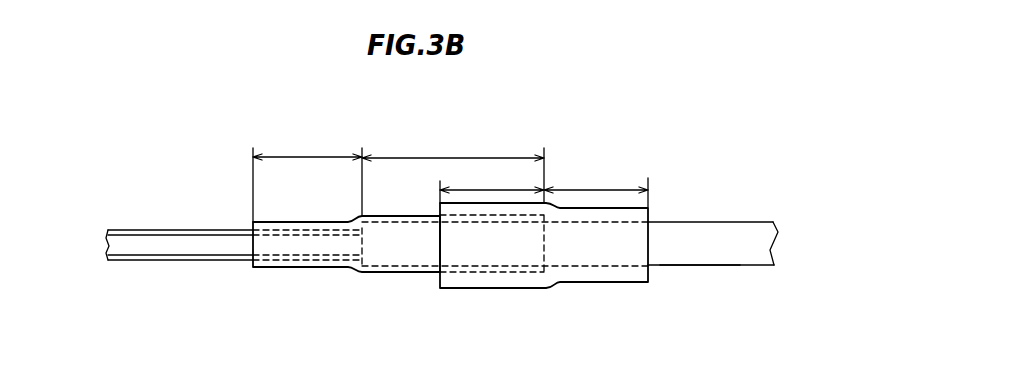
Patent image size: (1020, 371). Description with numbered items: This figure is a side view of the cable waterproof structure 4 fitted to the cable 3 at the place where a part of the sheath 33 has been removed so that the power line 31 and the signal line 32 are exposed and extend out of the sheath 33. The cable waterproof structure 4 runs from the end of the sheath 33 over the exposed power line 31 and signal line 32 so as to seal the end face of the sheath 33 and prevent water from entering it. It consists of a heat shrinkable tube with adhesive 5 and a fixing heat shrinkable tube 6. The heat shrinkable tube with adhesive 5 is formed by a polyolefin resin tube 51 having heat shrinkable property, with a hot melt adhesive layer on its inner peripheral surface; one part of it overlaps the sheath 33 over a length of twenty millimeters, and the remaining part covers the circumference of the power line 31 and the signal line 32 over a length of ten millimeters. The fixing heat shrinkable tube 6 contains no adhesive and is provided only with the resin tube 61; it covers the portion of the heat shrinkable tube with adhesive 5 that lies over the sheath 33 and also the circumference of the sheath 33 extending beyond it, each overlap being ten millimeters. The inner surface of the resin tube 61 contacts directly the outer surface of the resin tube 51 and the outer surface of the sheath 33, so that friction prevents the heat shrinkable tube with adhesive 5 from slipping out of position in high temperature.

The cable waterproof structure 4 is at (346, 122).
The cable 3 is at (697, 222).
The power line 31 is at (198, 244).
The signal line 32 is at (228, 258).
The sheath 33 is at (697, 257).
The heat shrinkable tube with adhesive 5 is at (328, 270).
The resin tube 51 is at (405, 267).
The fixing heat shrinkable tube 6 is at (577, 275).
The resin tube 61 is at (508, 280).